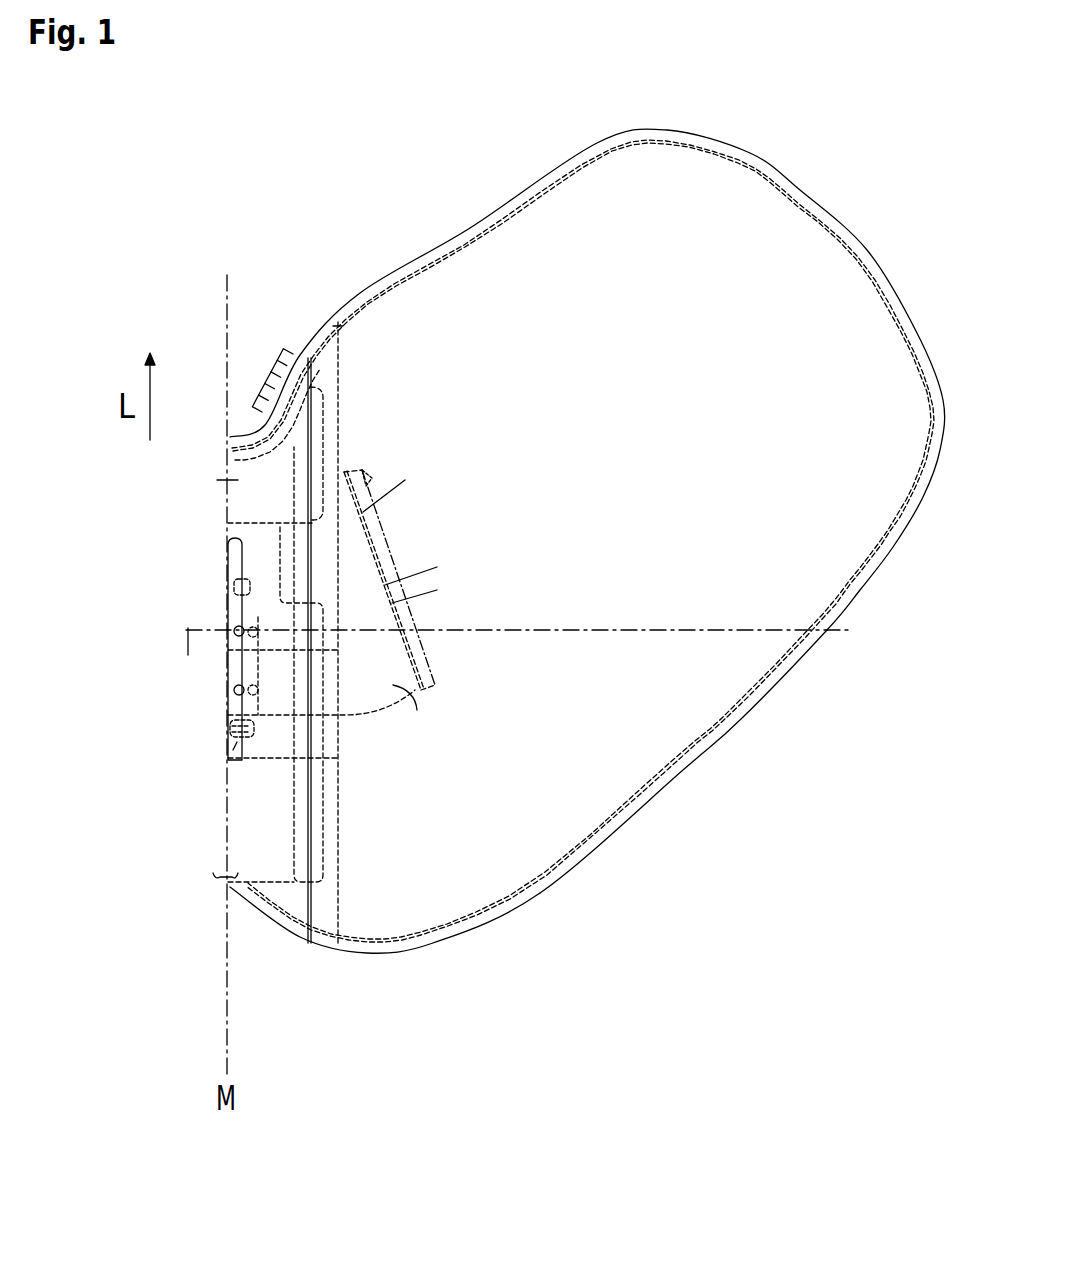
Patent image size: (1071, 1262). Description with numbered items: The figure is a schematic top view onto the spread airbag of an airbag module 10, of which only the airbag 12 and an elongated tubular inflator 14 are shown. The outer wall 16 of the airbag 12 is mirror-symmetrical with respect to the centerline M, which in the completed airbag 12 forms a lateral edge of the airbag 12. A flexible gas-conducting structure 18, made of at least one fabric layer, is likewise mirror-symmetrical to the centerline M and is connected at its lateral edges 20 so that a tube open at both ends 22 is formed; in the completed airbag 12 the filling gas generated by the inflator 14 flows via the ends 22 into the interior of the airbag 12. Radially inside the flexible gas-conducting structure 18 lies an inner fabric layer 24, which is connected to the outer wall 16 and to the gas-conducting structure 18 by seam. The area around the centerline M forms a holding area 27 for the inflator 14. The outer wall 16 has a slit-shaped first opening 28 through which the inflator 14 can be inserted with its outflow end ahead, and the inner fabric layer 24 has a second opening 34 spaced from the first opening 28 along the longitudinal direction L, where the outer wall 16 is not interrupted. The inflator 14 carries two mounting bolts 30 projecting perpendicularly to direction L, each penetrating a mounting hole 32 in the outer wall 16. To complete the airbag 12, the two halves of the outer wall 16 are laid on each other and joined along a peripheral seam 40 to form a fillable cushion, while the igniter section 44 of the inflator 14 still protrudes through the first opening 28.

The airbag module 10 is at (181, 210).
The airbag 12 is at (757, 156).
The inflator 14 is at (228, 556).
The outer wall 16 is at (818, 270).
The flexible gas-conducting structure 18 is at (395, 686).
The lateral edges 20 is at (380, 557).
The ends 22 is at (340, 447).
The inner fabric layer 24 is at (267, 845).
The holding area 27 is at (254, 780).
The first opening 28 is at (230, 730).
The mounting bolts 30 is at (234, 630).
The mounting hole 32 is at (232, 645).
The second opening 34 is at (230, 590).
The peripheral seam 40 is at (683, 770).
The igniter section 44 is at (228, 759).